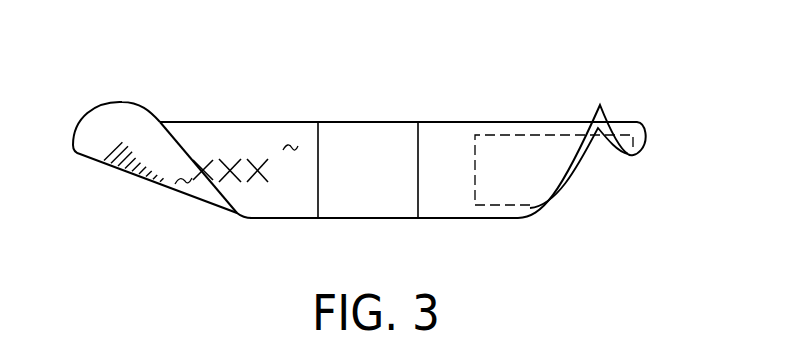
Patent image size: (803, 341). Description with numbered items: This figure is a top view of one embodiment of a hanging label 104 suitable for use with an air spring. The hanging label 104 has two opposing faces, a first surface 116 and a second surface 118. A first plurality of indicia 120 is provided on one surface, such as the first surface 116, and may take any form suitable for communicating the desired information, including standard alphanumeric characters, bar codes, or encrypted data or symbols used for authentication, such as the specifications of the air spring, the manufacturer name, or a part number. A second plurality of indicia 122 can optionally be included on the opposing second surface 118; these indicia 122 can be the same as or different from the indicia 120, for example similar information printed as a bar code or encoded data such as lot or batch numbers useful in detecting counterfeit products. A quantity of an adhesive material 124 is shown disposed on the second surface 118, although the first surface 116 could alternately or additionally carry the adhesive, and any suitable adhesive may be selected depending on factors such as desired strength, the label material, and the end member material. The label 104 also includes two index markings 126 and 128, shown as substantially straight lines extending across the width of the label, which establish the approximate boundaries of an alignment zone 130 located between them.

The hanging label 104 is at (409, 88).
The first surface 116 is at (292, 145).
The second surface 118 is at (180, 183).
The first plurality of indicia 120 is at (234, 152).
The second plurality of indicia 122 is at (109, 134).
The adhesive material 124 is at (600, 170).
The index marking 126 is at (317, 188).
The index marking 128 is at (417, 188).
The alignment zone 130 is at (362, 150).